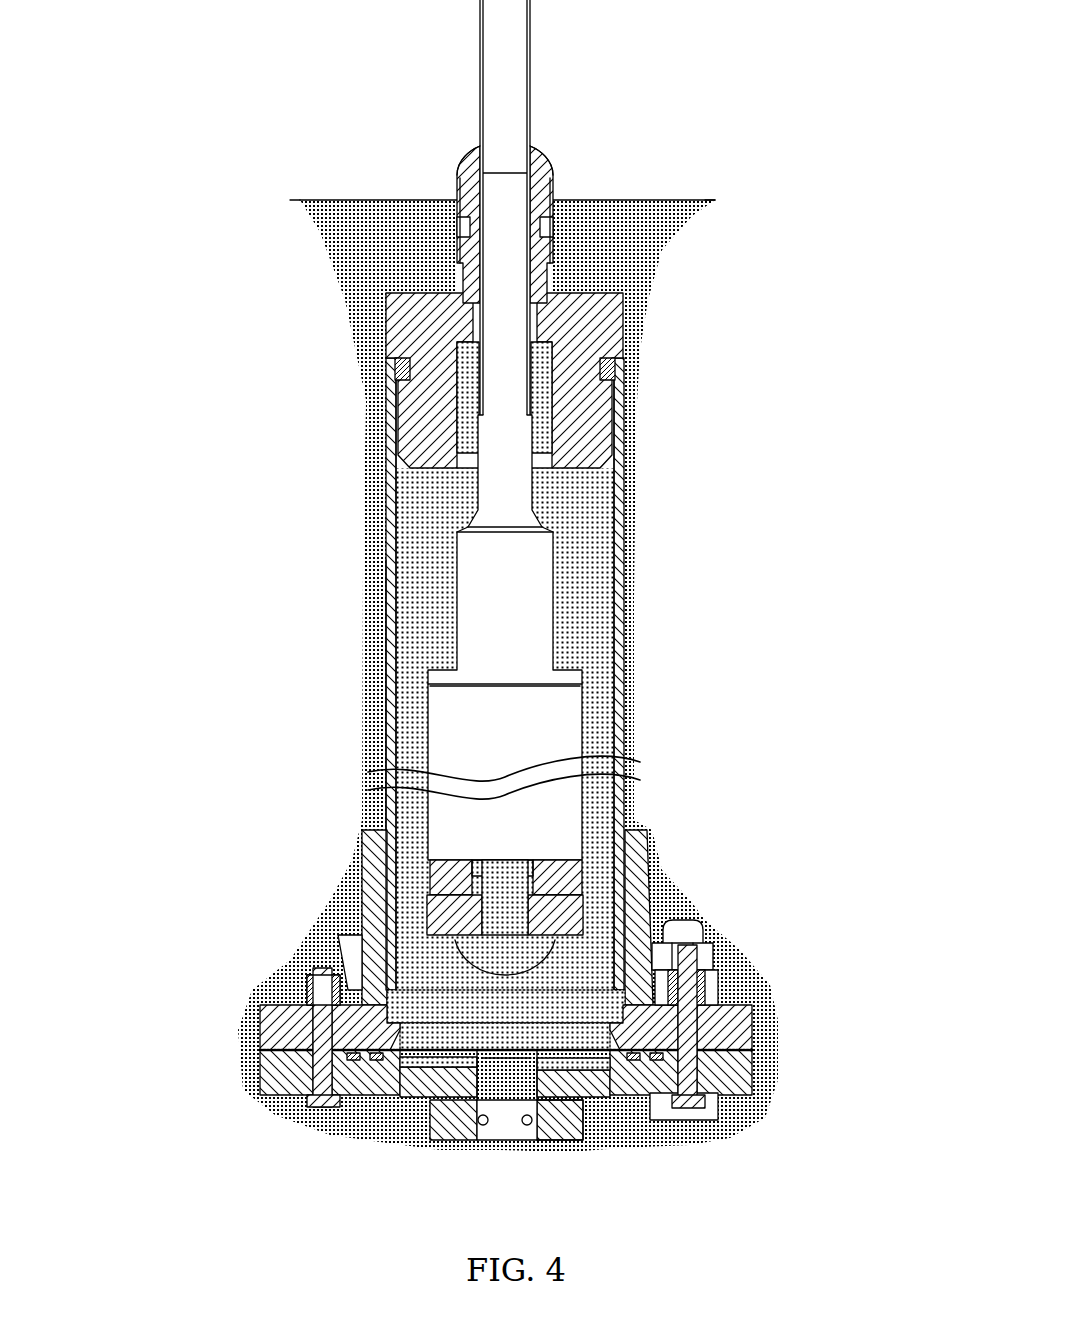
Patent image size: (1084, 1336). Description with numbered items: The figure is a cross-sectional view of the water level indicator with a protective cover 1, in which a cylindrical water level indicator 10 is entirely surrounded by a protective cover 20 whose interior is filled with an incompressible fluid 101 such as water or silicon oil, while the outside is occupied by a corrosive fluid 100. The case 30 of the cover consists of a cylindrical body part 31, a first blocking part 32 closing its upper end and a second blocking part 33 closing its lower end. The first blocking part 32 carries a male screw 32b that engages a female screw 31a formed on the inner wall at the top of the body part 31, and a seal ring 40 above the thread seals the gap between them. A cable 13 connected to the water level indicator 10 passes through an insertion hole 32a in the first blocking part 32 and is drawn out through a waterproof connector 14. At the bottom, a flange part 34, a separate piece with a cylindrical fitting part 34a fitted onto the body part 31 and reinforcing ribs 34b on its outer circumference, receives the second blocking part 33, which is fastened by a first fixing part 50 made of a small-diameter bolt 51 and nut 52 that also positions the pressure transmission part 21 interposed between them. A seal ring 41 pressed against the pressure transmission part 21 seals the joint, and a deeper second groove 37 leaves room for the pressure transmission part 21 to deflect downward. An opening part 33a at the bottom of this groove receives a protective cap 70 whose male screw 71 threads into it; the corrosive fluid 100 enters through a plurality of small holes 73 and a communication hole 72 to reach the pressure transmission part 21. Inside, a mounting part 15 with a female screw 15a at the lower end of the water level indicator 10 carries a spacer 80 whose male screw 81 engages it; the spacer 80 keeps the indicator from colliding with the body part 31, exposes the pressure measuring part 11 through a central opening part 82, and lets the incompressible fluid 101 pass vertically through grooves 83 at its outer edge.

The water level indicator with a protective cover 1 is at (320, 352).
The water level indicator 10 is at (414, 637).
The pressure measuring part 11 is at (435, 855).
The cable 13 is at (480, 3).
The waterproof connector 14 is at (467, 150).
The mounting part 15 is at (574, 834).
The female screw 15a is at (600, 858).
The protective cover 20 is at (372, 555).
The pressure transmission part 21 is at (505, 1060).
The case 30 is at (591, 562).
The body part 31 is at (581, 674).
The female screw 31a is at (608, 388).
The first blocking part 32 is at (570, 301).
The insertion hole 32a is at (500, 305).
The male screw 32b is at (595, 445).
The second blocking part 33 is at (506, 1131).
The opening part 33a is at (520, 1080).
The flange part 34 is at (745, 1010).
The fitting part 34a is at (652, 876).
The reinforcing rib 34b is at (365, 950).
The second groove 37 is at (375, 1057).
The seal ring 40 is at (620, 368).
The seal ring 41 is at (352, 1058).
The first fixing part 50 is at (498, 991).
The bolt 51 is at (302, 1002).
The nut 52 is at (310, 978).
The protective cap 70 is at (452, 1012).
The male screw 71 is at (452, 1038).
The communication hole 72 is at (495, 1070).
The small holes 73 is at (560, 1125).
The spacer 80 is at (690, 978).
The male screw 81 is at (582, 832).
The opening part 82 is at (428, 915).
The groove 83 is at (452, 905).
The corrosive fluid 100 is at (618, 198).
The incompressible fluid 101 is at (582, 632).